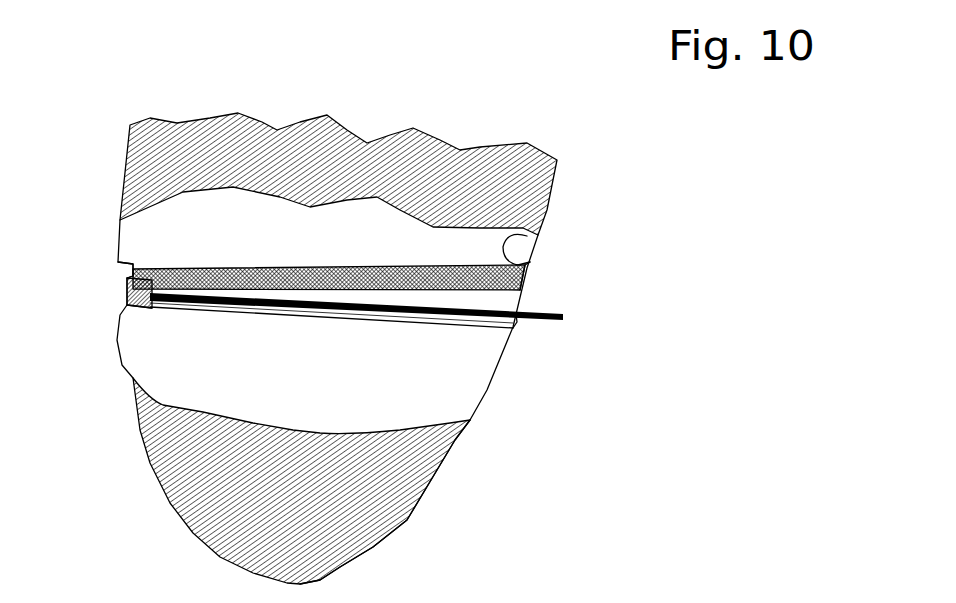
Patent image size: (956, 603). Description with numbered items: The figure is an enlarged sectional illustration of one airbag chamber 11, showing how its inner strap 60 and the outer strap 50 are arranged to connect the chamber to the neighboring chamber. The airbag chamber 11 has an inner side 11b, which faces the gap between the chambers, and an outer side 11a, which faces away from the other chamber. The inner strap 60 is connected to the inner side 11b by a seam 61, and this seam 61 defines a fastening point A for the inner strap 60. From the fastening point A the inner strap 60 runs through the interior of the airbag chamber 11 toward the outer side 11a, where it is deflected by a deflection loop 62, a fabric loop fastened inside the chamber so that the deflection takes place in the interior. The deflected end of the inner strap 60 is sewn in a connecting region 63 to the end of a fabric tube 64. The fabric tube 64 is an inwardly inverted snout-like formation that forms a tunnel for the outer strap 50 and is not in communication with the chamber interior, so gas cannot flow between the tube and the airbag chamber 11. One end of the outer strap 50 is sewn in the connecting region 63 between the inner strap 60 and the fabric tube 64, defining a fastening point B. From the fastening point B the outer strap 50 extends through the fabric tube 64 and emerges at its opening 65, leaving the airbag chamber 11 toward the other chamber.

The airbag chamber 11 is at (160, 163).
The outer side 11a is at (137, 417).
The inner side 11b is at (466, 428).
The inner strap 60 is at (352, 268).
The seam 61 is at (530, 270).
The deflection loop 62 is at (118, 325).
The connecting region 63 is at (160, 304).
The fabric tube 64 is at (350, 318).
The opening 65 is at (515, 327).
The outer strap 50 is at (563, 316).
The fastening point A is at (545, 216).
The fastening point B is at (153, 312).